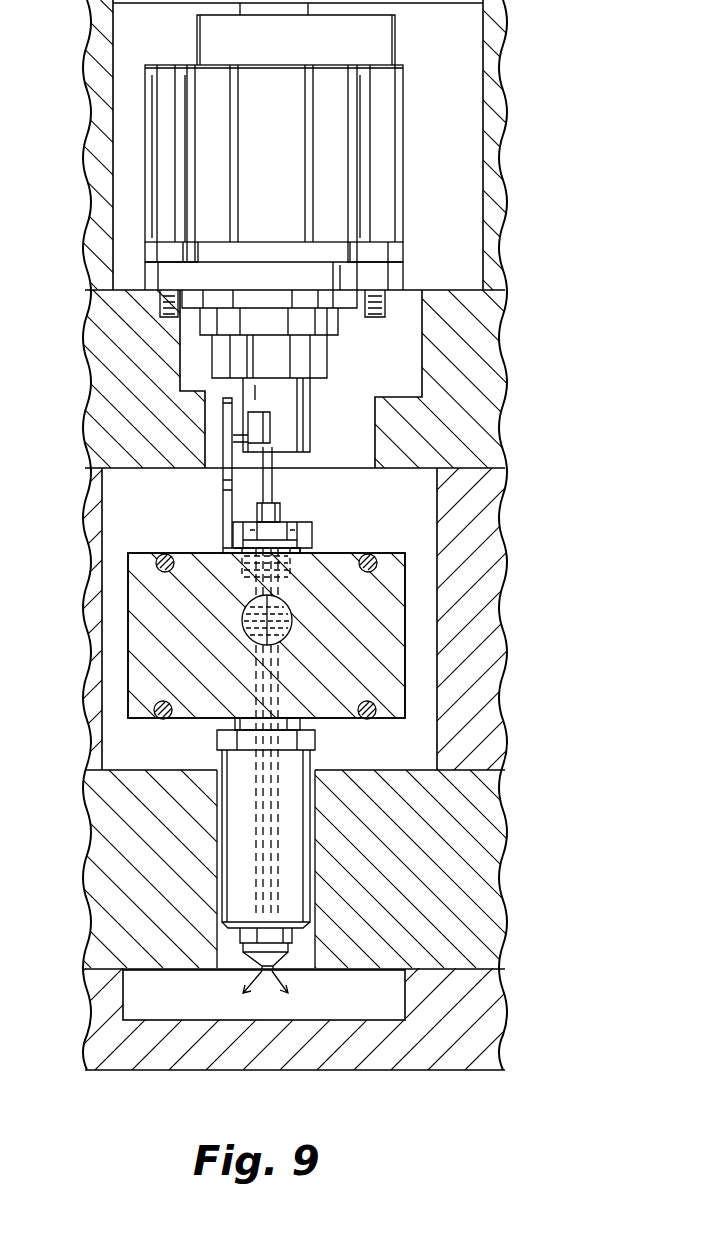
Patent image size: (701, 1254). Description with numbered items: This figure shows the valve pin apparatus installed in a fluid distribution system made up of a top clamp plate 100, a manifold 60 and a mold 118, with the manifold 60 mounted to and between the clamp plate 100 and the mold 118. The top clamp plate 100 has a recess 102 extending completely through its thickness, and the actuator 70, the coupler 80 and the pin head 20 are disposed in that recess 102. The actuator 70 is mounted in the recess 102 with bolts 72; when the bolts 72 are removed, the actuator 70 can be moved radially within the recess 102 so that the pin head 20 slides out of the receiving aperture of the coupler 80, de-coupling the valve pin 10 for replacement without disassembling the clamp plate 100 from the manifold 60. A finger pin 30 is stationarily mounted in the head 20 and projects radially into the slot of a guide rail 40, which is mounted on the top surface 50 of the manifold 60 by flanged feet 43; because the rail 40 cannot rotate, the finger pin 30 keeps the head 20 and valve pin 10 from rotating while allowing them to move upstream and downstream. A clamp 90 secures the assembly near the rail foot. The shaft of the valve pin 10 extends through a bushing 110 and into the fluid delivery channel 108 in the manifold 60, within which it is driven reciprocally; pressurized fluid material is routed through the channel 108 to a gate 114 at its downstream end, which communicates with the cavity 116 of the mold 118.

The valve pin 10 is at (273, 481).
The head of the valve pin 20 is at (270, 428).
The finger pin 30 is at (243, 433).
The guide rail 40 is at (215, 500).
The flanged feet 43 is at (303, 554).
The top surface 50 is at (176, 553).
The manifold 60 is at (399, 547).
The actuator 70 is at (212, 357).
The bolts 72 is at (165, 300).
The coupler 80 is at (311, 408).
The clamp 90 is at (301, 536).
The top clamp plate 100 is at (505, 284).
The recess 102 is at (468, 205).
The fluid delivery channel 108 is at (273, 589).
The bushing 110 is at (282, 513).
The gate 114 is at (281, 972).
The cavity 116 is at (205, 1008).
The mold 118 is at (494, 1008).